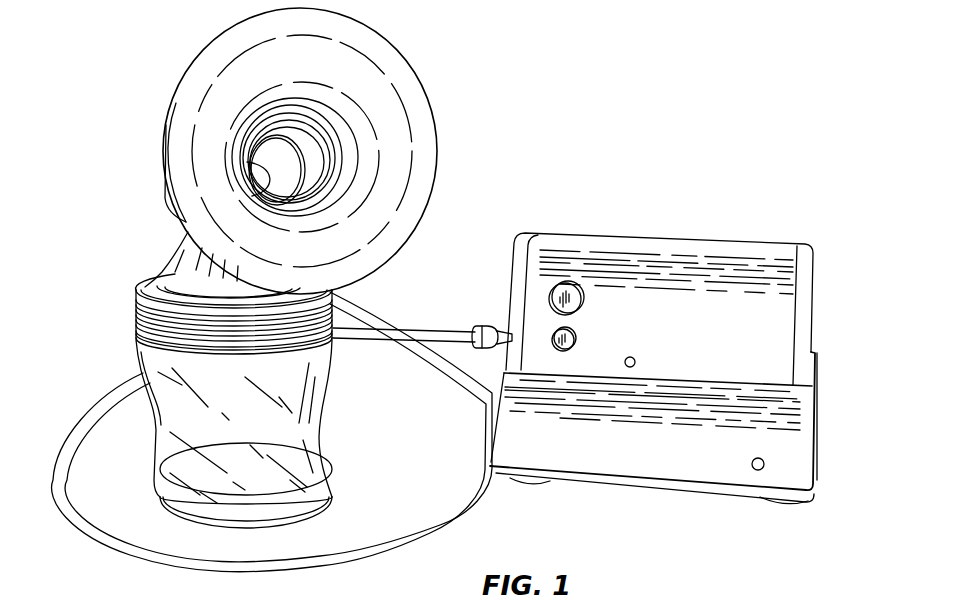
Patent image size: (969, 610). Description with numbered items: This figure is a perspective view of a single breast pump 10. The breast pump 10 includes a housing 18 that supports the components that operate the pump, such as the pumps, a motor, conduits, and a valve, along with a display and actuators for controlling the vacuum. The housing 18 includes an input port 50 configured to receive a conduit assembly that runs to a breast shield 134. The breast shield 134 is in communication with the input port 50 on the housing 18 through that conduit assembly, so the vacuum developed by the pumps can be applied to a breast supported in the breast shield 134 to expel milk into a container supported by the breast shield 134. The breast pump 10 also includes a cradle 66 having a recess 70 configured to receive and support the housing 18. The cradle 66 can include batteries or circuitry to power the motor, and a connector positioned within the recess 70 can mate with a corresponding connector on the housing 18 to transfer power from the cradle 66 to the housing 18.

The single breast pump 10 is at (692, 86).
The breast shield 134 is at (402, 83).
The housing 18 is at (660, 247).
The input port 50 is at (506, 316).
The recess 70 is at (705, 368).
The cradle 66 is at (800, 463).